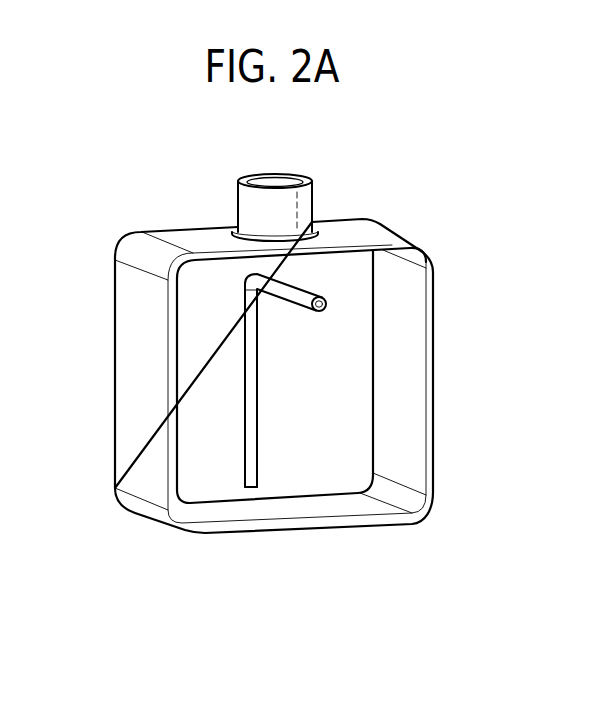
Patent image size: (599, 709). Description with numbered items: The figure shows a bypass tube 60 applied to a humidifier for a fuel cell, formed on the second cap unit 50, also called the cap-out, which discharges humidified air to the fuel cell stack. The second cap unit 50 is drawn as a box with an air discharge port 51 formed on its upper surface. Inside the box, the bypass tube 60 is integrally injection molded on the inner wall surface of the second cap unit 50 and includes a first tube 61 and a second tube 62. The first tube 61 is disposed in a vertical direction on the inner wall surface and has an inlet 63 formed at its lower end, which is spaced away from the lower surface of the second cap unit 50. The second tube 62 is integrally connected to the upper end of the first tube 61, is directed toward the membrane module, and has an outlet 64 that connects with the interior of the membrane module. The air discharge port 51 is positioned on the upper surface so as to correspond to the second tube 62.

The second cap unit 50 is at (450, 383).
The air discharge port 51 is at (313, 199).
The bypass tube 60 is at (271, 421).
The first tube 61 is at (253, 445).
The second tube 62 is at (293, 288).
The inlet 63 is at (252, 488).
The outlet 64 is at (323, 309).